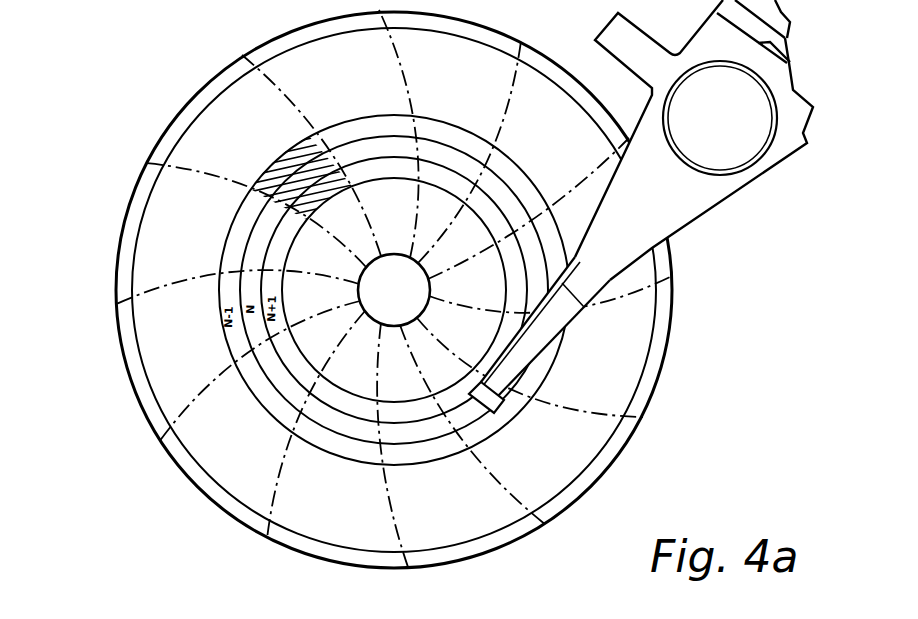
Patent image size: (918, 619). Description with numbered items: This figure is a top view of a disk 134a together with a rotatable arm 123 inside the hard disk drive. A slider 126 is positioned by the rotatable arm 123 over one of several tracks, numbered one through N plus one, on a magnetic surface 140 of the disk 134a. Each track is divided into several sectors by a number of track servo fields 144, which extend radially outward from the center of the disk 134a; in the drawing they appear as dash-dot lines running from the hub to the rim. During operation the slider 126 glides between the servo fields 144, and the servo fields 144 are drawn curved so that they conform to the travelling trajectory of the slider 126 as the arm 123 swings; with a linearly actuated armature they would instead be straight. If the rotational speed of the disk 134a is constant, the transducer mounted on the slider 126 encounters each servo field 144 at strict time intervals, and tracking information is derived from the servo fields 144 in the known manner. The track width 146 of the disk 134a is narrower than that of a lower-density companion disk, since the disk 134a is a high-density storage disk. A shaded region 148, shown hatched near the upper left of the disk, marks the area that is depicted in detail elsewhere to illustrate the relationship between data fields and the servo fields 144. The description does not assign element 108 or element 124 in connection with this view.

The actuator arm assembly 108 is at (733, 133).
The rotatable arm 123 is at (597, 176).
The suspension load beam 124 is at (527, 348).
The slider 126 is at (510, 405).
The disk 134a is at (153, 147).
The magnetic surface 140 is at (188, 100).
The track servo fields 144 is at (281, 82).
The track width 146 is at (467, 417).
The shaded region 148 is at (322, 152).